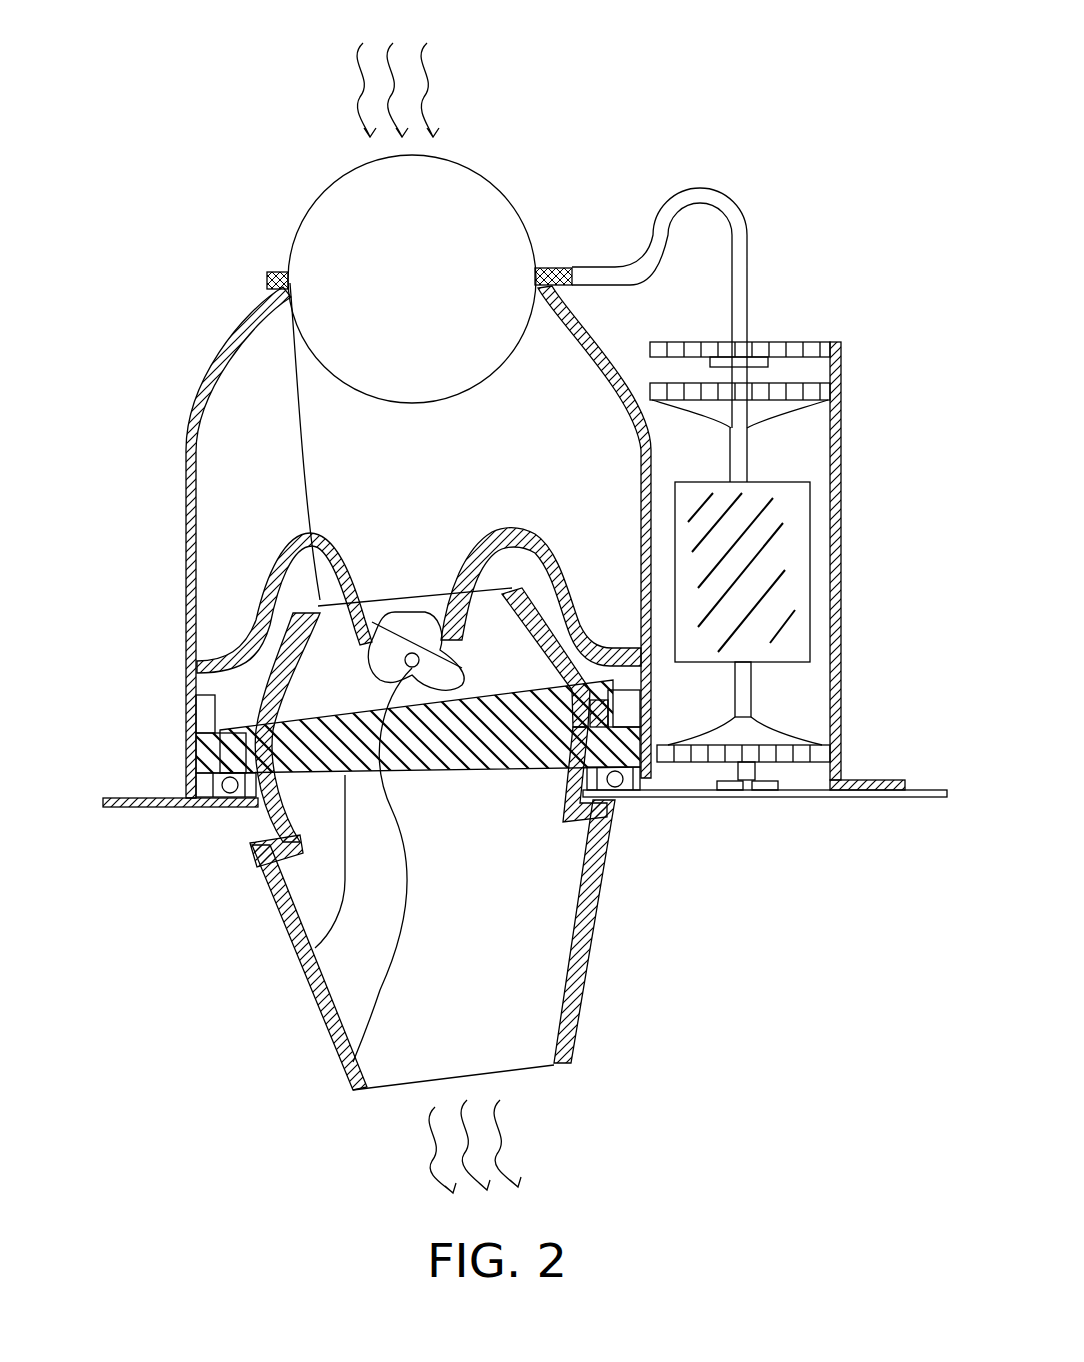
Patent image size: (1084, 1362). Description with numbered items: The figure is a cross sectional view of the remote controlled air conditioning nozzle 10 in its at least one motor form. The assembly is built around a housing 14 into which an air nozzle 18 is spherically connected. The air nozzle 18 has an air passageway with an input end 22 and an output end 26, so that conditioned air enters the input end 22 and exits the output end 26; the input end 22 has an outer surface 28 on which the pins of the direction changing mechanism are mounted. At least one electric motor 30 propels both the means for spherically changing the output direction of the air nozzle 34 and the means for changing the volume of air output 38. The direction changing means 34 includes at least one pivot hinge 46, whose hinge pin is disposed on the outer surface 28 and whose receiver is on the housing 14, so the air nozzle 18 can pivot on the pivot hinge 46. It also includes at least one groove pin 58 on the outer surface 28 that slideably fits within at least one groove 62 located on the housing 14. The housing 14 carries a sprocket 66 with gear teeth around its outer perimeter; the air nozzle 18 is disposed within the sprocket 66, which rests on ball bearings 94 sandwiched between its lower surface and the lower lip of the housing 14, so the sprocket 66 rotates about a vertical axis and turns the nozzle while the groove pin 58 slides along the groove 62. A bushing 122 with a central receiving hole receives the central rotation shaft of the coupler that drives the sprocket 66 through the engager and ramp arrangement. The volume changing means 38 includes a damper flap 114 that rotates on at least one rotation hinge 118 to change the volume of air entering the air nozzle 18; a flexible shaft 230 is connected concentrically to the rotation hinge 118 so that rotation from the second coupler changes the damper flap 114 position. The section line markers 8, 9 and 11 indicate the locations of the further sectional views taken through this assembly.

The section line 8- 8 is at (162, 897).
The section line 9- 9 is at (821, 804).
The remote controlled air conditioning nozzle 10 is at (680, 187).
The section line 11- 11 is at (845, 328).
The housing 14 is at (217, 352).
The air nozzle 18 is at (592, 937).
The input end 22 is at (278, 283).
The output end 26 is at (380, 1093).
The outer surface 28 is at (290, 820).
The electric motor 30 is at (757, 578).
The means for spherically changing the output direction of the air nozzle 34 is at (243, 653).
The means for changing the volume of air output 38 is at (341, 232).
The pivot hinge 46 is at (614, 797).
The groove pin 58 is at (345, 1032).
The groove 62 is at (267, 557).
The sprocket 66 is at (200, 760).
The ball bearings 94 is at (238, 792).
The damper flap 114 is at (477, 173).
The rotation hinge 118 is at (541, 265).
The bushing 122 is at (767, 790).
The flexible shaft 230 is at (719, 187).